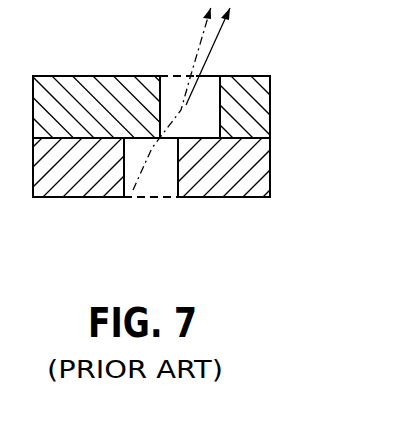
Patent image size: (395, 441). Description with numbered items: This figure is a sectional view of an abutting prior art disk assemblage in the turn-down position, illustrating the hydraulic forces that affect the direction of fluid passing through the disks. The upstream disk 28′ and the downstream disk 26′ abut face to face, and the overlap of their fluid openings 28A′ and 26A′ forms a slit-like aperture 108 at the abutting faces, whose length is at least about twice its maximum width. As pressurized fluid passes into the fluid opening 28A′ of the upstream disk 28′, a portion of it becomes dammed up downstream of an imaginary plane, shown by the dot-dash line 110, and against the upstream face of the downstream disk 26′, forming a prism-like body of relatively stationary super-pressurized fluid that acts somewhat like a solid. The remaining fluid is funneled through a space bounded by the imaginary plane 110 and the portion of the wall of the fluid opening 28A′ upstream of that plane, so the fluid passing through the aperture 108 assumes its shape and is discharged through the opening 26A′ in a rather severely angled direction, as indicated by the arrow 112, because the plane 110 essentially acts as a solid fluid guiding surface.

The downstream disk 26′ is at (271, 99).
The upstream disk 28′ is at (270, 178).
The fluid opening of downstream disk 26A′ is at (178, 78).
The fluid opening of upstream disk 28A′ is at (163, 191).
The slit-like aperture 108 is at (176, 122).
The imaginary plane 110 is at (142, 165).
The arrow 112 is at (221, 27).